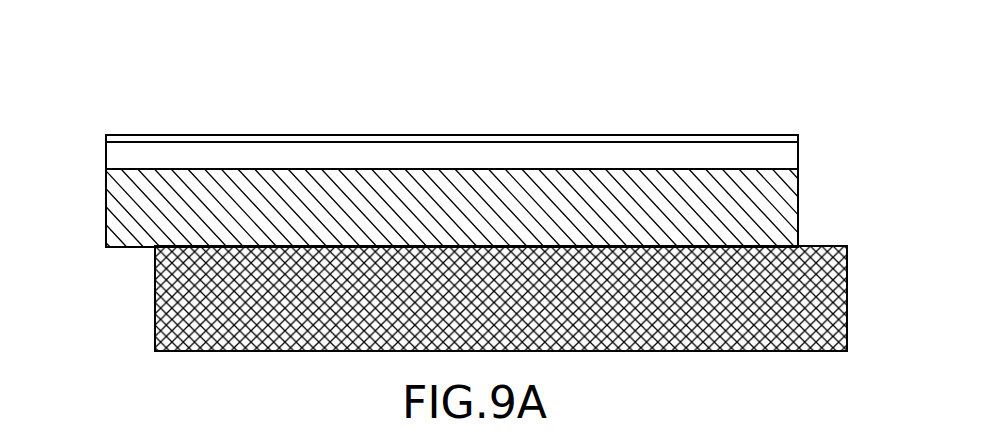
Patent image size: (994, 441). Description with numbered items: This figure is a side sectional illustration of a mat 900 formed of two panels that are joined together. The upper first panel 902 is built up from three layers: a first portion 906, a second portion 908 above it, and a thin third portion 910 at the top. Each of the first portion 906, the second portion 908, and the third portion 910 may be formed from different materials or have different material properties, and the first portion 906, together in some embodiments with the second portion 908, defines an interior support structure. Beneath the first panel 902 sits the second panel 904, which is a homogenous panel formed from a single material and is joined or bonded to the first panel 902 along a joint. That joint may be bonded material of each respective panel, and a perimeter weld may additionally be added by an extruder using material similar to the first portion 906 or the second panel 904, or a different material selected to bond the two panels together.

The mat 900 is at (242, 108).
The first panel 902 is at (93, 135).
The second panel 904 is at (858, 246).
The first portion 906 is at (780, 197).
The second portion 908 is at (787, 156).
The third portion 910 is at (692, 138).